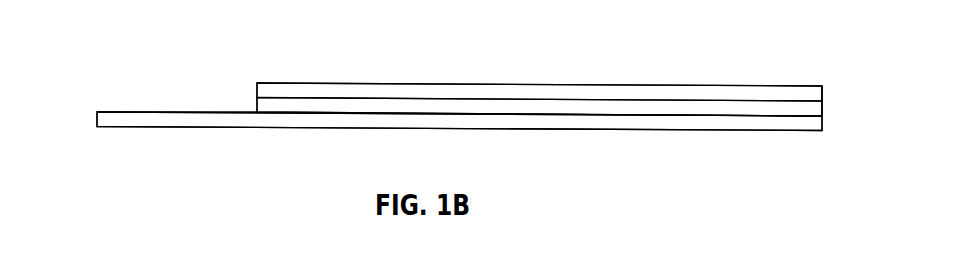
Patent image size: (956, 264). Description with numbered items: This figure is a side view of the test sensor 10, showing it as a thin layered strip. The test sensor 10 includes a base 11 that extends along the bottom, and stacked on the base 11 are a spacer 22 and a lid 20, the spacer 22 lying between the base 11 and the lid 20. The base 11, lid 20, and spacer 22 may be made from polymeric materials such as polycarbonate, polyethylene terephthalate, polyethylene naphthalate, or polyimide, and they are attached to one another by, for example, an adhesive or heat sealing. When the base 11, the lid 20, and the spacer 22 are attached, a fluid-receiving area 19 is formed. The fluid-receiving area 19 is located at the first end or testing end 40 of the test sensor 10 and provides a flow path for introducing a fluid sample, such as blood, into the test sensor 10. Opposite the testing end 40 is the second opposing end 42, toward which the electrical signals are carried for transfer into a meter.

The test sensor 10 is at (738, 66).
The base 11 is at (168, 127).
The fluid-receiving area 19 is at (826, 107).
The lid 20 is at (306, 83).
The spacer 22 is at (433, 105).
The testing end 40 is at (824, 96).
The second opposing end 42 is at (109, 63).